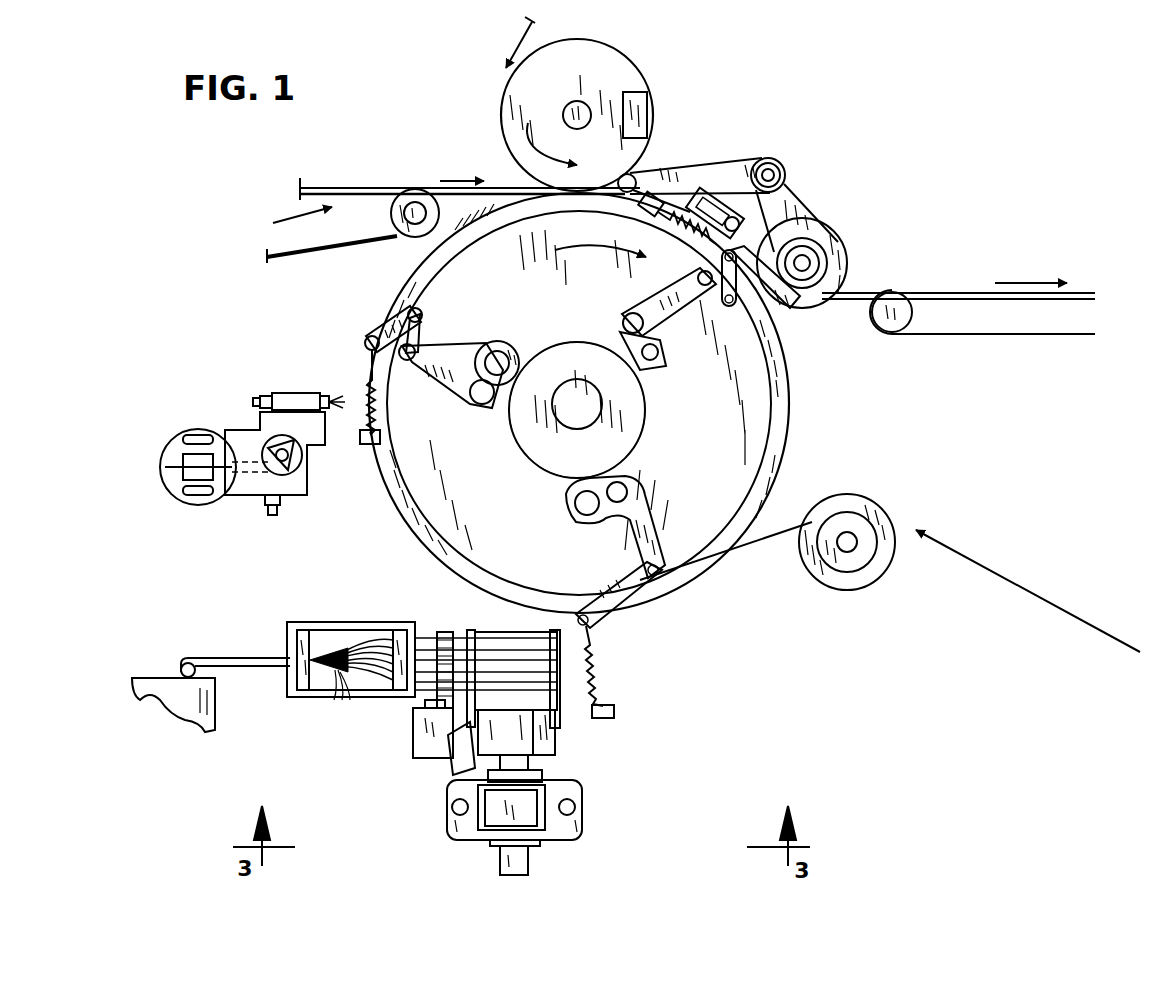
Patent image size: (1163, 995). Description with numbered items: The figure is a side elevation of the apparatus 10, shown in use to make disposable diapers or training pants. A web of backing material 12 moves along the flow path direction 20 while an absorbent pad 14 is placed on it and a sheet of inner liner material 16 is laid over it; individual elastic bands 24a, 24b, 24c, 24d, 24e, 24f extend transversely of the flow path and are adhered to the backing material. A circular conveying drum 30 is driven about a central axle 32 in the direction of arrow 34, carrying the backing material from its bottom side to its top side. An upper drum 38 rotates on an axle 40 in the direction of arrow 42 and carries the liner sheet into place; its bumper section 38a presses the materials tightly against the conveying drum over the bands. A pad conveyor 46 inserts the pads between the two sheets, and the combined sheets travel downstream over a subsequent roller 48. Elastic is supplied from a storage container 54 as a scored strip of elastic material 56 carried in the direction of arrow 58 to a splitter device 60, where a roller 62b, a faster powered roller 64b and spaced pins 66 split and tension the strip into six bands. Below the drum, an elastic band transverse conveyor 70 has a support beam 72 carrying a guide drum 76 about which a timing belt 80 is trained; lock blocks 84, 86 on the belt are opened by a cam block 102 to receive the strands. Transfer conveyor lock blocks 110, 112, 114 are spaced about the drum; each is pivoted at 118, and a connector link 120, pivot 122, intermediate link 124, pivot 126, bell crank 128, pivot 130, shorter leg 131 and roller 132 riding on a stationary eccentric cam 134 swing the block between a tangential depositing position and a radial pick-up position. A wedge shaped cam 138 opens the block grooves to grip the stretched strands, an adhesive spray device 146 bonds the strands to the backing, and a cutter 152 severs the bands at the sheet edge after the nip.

The apparatus 10 is at (824, 119).
The backing material 12 is at (750, 557).
The absorbent pad 14 is at (375, 186).
The inner liner material 16 is at (537, 30).
The flow path direction 20 is at (1030, 283).
The elastic band 24a is at (372, 692).
The elastic band 24b is at (382, 694).
The elastic band 24c is at (448, 738).
The elastic band 24d is at (366, 640).
The elastic band 24e is at (378, 645).
The elastic band 24f is at (390, 640).
The circular conveying drum 30 is at (416, 262).
The central axle 32 is at (538, 447).
The arrow 34 is at (541, 238).
The upper drum 38 is at (617, 47).
The bumper section 38a is at (645, 120).
The axle 40 is at (582, 106).
The arrow 42 is at (546, 123).
The pad conveyor 46 is at (317, 235).
The subsequent roller 48 is at (836, 236).
The elastic storage container 54 is at (190, 715).
The strip of elastic material 56 is at (210, 655).
The arrow 58 is at (272, 650).
The splitter device 60 is at (326, 620).
The roller 62b is at (302, 694).
The powered roller 64b is at (404, 640).
The spaced pins 66 is at (332, 690).
The elastic band transverse conveyor 70 is at (461, 695).
The support beam 72 is at (560, 822).
The guide drum 76 is at (507, 630).
The timing belt 80 is at (556, 745).
The lock block 84 is at (562, 630).
The lock block 86 is at (472, 630).
The cam block 102 is at (455, 772).
The transfer conveyor lock block 110 is at (745, 628).
The transfer conveyor lock block 112 is at (363, 378).
The transfer conveyor lock block 114 is at (642, 222).
The pivot 118 is at (366, 336).
The connector link 120 is at (388, 308).
The pivotal connection 122 is at (418, 305).
The intermediate link 124 is at (420, 337).
The pivotal connection 126 is at (410, 362).
The bell crank 128 is at (436, 380).
The pivotal connection 130 is at (483, 404).
The shorter leg 131 is at (513, 377).
The roller 132 is at (505, 342).
The stationary eccentric cam 134 is at (648, 420).
The wedge shaped cam 138 is at (607, 622).
The adhesive spray device 146 is at (290, 392).
The cutter 152 is at (690, 240).